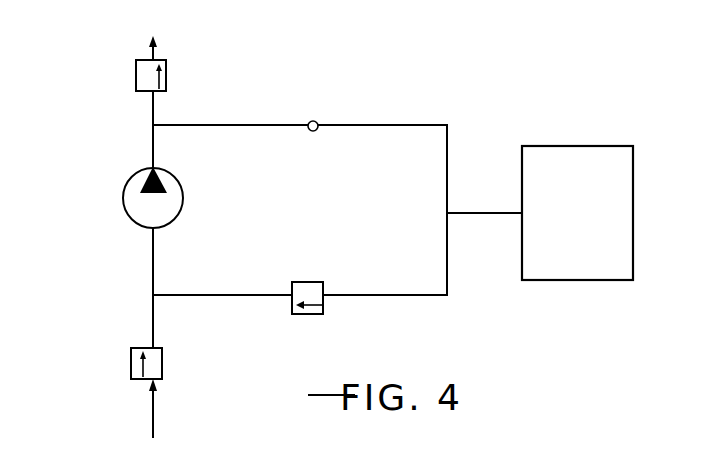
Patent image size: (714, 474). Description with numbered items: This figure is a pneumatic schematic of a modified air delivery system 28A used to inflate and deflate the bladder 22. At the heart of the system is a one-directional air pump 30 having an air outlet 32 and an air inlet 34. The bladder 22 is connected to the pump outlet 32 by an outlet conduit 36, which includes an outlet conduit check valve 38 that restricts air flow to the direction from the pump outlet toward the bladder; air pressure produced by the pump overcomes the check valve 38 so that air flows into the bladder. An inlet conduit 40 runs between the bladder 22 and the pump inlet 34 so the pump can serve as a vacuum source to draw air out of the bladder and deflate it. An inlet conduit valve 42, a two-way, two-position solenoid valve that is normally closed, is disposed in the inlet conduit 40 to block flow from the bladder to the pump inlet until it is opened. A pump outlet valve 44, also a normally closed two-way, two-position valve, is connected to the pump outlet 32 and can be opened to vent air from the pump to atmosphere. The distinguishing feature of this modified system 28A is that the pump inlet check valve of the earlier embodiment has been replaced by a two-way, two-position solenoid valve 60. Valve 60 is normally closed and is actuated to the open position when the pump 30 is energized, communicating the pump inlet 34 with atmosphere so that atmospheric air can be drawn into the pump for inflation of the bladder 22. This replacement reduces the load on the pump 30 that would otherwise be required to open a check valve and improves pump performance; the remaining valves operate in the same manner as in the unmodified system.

The modified air delivery system 28A is at (337, 46).
The bladder 22 is at (555, 146).
The one-directional air pump 30 is at (124, 187).
The air outlet 32 is at (153, 143).
The air inlet 34 is at (152, 255).
The outlet conduit 36 is at (394, 125).
The outlet conduit check valve 38 is at (311, 121).
The inlet conduit 40 is at (208, 295).
The inlet conduit valve 42 is at (312, 282).
The pump outlet valve 44 is at (166, 78).
The two-way, two-position solenoid valve 60 is at (131, 370).